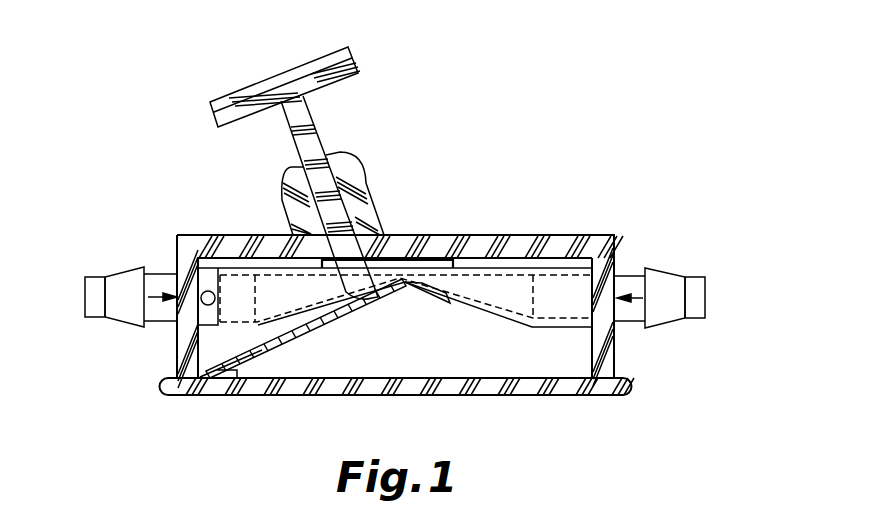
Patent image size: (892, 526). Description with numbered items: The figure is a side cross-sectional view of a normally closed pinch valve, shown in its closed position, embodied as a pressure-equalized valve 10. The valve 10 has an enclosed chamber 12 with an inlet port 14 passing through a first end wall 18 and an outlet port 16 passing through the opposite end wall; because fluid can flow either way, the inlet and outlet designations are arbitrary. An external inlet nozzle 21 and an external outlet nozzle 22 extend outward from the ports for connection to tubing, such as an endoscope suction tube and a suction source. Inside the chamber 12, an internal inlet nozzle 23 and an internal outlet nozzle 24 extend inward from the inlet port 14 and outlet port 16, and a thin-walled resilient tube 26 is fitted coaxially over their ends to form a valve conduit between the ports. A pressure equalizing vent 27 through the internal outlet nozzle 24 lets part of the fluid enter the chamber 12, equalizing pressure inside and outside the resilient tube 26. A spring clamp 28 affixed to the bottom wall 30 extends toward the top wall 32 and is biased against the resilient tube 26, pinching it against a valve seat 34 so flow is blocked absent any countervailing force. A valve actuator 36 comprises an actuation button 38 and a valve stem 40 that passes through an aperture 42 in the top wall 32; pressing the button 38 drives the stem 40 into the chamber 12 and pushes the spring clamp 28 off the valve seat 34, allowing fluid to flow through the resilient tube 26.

The pressure-equalized valve 10 is at (638, 137).
The enclosed chamber 12 is at (177, 238).
The inlet port 14 is at (647, 295).
The outlet port 16 is at (146, 297).
The first end wall 18 is at (607, 360).
The external inlet nozzle 21 is at (668, 269).
The external outlet nozzle 22 is at (120, 324).
The internal inlet nozzle 23 is at (560, 315).
The internal outlet nozzle 24 is at (230, 326).
The resilient tube 26 is at (523, 273).
The pressure equalizing vent 27 is at (176, 340).
The spring clamp 28 is at (265, 365).
The bottom wall 30 is at (322, 395).
The top wall 32 is at (472, 262).
The valve seat 34 is at (440, 261).
The valve actuator 36 is at (199, 70).
The actuation button 38 is at (358, 52).
The valve stem 40 is at (315, 127).
The aperture 42 is at (373, 223).